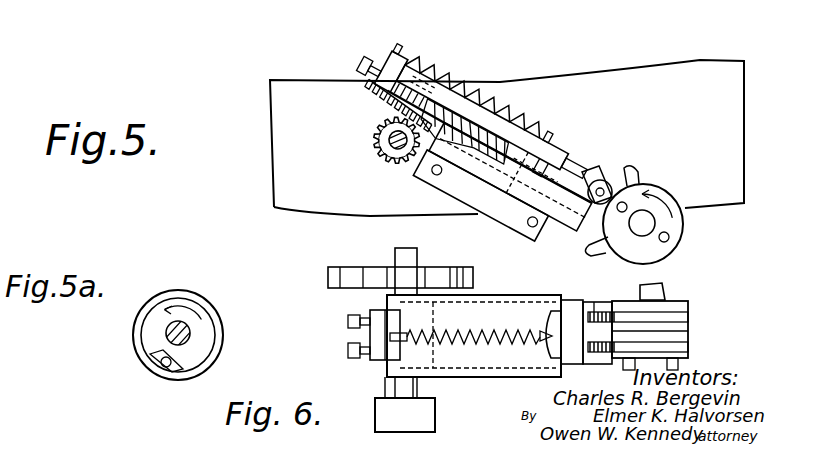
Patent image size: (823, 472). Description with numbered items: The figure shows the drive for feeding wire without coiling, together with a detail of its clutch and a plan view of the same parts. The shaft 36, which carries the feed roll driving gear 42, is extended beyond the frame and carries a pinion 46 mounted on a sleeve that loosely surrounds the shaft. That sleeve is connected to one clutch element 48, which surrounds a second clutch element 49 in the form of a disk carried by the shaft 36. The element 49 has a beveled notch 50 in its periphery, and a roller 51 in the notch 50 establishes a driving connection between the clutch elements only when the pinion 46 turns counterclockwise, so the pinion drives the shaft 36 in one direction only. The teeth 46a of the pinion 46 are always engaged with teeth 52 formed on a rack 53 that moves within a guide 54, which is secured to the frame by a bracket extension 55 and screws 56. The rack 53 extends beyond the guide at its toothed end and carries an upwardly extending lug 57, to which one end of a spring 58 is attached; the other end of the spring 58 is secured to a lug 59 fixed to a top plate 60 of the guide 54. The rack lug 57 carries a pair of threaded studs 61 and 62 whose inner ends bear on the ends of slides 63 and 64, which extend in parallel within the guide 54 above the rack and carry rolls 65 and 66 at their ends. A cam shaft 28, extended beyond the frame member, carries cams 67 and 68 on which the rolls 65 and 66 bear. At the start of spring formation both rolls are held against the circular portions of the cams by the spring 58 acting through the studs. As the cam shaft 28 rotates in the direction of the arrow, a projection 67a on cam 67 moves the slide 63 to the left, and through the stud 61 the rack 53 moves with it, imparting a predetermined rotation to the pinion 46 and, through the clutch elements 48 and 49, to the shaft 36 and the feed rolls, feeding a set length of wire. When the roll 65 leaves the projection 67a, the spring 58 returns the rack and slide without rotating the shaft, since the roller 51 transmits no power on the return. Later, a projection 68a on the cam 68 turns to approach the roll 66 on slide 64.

In FIG. 5, the cam shaft 28 is at (657, 224).
In FIG. 6, the cam shaft 28 is at (664, 289).
In FIG. 5, the shaft 36 is at (390, 139).
In FIG. 5A, the shaft 36 is at (192, 334).
In FIG. 6, the shaft 36 is at (396, 259).
In FIG. 6, the feed roll driving gear 42 is at (328, 283).
In FIG. 5, the pinion 46 is at (386, 150).
In FIG. 5, the teeth of the pinion 46a is at (398, 164).
In FIG. 5A, the clutch element 48 is at (193, 294).
In FIG. 5A, the clutch element 49 is at (148, 318).
In FIG. 5A, the beveled notch 50 is at (155, 357).
In FIG. 5A, the roller 51 is at (163, 368).
In FIG. 5, the teeth 52 is at (368, 96).
In FIG. 5, the rack 53 is at (377, 83).
In FIG. 5, the guide 54 is at (490, 203).
In FIG. 5, the bracket extension 55 is at (576, 232).
In FIG. 5, the screws 56 is at (437, 177).
In FIG. 5, the lug 57 is at (382, 72).
In FIG. 6, the lug 57 is at (372, 360).
In FIG. 5, the spring 58 is at (440, 68).
In FIG. 6, the spring 58 is at (520, 336).
In FIG. 5, the lug 59 is at (558, 130).
In FIG. 5, the top plate 60 is at (518, 125).
In FIG. 6, the top plate 60 is at (508, 306).
In FIG. 5, the stud 61 is at (355, 55).
In FIG. 6, the stud 61 is at (350, 350).
In FIG. 6, the stud 62 is at (348, 321).
In FIG. 5, the slide 63 is at (498, 127).
In FIG. 6, the slide 63 is at (564, 334).
In FIG. 6, the slide 64 is at (568, 306).
In FIG. 5, the roll 65 is at (608, 186).
In FIG. 6, the roll 65 is at (593, 353).
In FIG. 6, the roll 66 is at (601, 312).
In FIG. 5, the cam 67 is at (680, 220).
In FIG. 6, the cam 67 is at (688, 348).
In FIG. 5, the projection 67a is at (638, 176).
In FIG. 6, the cam 68 is at (658, 316).
In FIG. 5, the projection 68a is at (608, 247).
In FIG. 6, the projection 68a is at (595, 301).